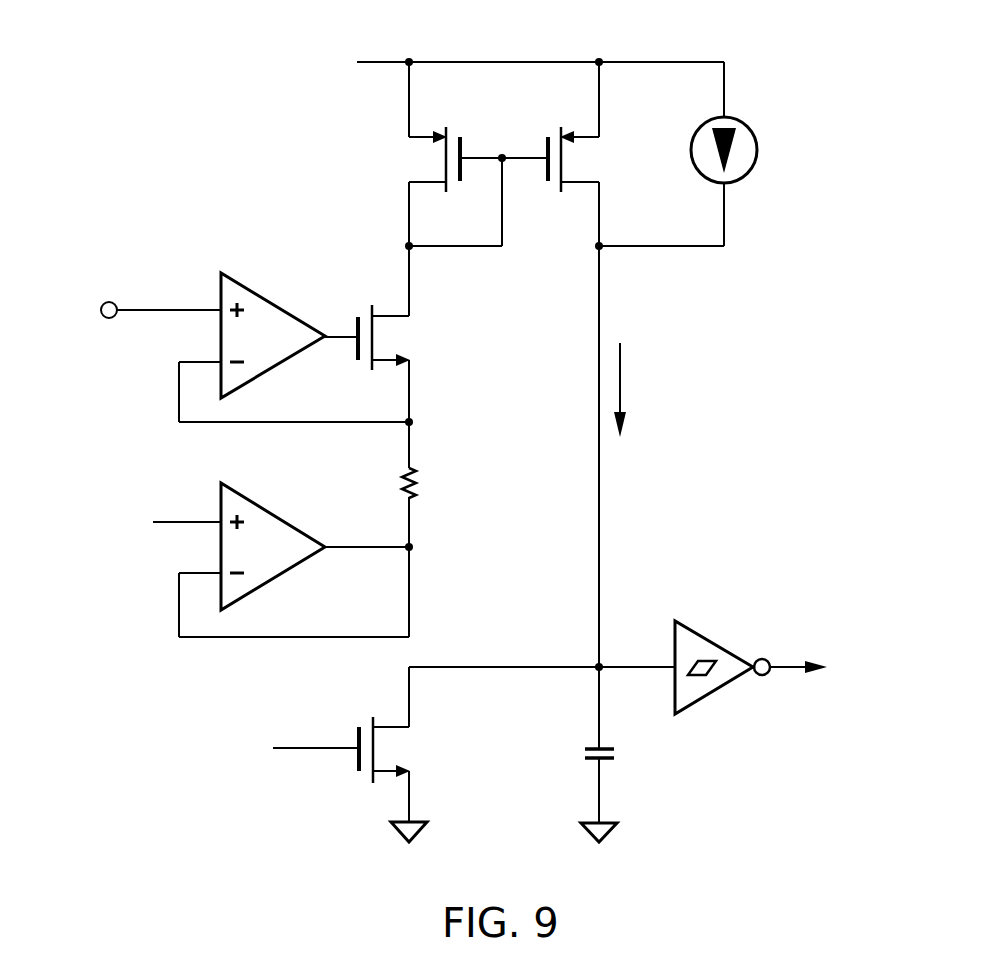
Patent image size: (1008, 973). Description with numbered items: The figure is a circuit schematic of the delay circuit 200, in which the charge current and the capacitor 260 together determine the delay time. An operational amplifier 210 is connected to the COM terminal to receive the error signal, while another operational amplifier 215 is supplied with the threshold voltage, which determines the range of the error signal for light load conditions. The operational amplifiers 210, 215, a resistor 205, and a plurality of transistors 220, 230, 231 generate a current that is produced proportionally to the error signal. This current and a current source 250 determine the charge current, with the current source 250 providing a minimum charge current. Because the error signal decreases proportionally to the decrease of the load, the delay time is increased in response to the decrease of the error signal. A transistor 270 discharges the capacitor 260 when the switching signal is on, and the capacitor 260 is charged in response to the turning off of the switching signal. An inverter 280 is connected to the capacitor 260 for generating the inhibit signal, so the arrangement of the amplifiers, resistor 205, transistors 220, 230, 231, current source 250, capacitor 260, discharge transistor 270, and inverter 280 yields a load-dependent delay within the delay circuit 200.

The delay circuit 200 is at (840, 35).
The resistor 205 is at (422, 488).
The operational amplifier 210 is at (265, 295).
The operational amplifier 215 is at (267, 527).
The transistor 220 is at (410, 338).
The transistor 230 is at (408, 162).
The transistor 231 is at (597, 167).
The current source 250 is at (762, 153).
The capacitor 260 is at (620, 753).
The transistor 270 is at (412, 752).
The inverter 280 is at (715, 638).